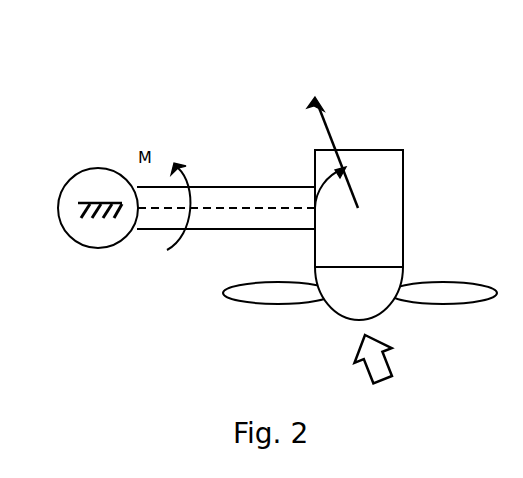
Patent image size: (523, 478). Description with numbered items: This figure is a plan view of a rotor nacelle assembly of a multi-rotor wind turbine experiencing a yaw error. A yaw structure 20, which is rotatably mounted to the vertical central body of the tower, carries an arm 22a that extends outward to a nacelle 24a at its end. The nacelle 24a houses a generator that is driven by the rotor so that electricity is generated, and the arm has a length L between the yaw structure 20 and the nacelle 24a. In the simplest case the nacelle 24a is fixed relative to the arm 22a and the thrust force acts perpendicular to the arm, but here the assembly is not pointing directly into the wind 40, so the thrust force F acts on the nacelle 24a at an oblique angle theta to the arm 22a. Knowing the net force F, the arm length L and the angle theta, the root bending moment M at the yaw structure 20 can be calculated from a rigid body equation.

The yaw structure 20 is at (97, 240).
The arm 22a is at (272, 187).
The nacelle 24a is at (367, 150).
The wind 40 is at (392, 365).